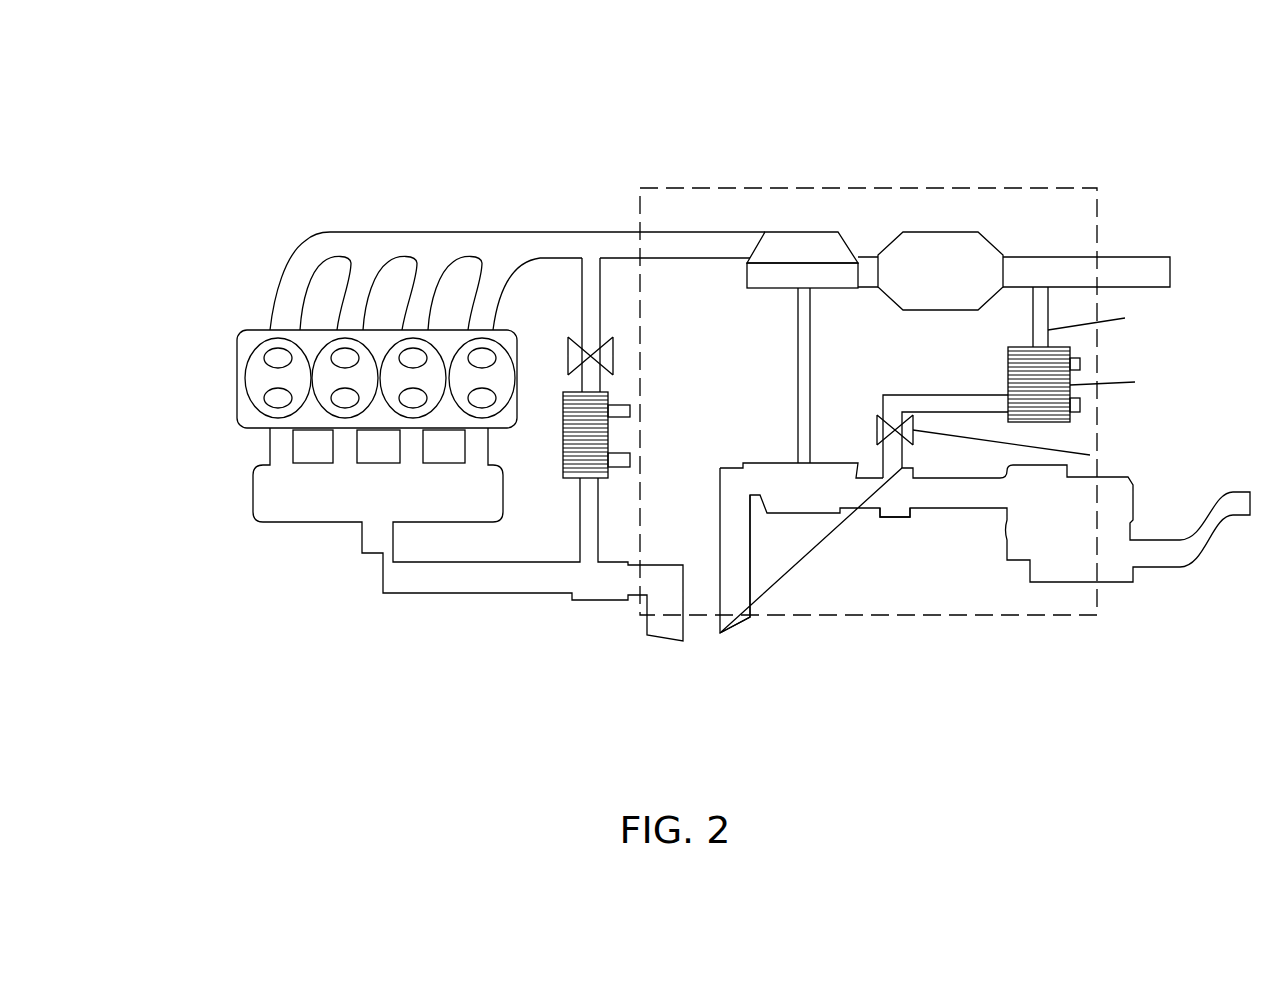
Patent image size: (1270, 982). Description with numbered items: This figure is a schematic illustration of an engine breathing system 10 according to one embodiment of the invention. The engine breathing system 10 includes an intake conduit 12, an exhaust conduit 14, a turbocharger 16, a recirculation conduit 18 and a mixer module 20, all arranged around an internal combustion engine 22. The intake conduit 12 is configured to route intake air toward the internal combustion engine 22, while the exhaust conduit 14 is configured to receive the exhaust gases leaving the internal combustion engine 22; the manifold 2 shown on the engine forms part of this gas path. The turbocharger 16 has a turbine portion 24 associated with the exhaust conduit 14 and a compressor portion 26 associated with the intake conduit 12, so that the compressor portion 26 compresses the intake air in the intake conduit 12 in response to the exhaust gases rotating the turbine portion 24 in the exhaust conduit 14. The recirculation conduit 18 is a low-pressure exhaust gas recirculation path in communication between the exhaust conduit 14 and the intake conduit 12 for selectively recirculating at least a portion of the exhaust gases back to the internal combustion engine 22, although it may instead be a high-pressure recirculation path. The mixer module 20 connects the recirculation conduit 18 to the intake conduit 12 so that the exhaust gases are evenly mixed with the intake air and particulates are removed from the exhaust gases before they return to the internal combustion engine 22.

The exhaust manifold 2 is at (320, 245).
The engine breathing system 10 is at (1128, 174).
The intake conduit 12 is at (957, 508).
The exhaust conduit 14 is at (298, 522).
The turbocharger 16 is at (784, 414).
The recirculation conduit 18 is at (952, 395).
The mixer module 20 is at (890, 517).
The internal combustion engine 22 is at (237, 348).
The turbine portion 24 is at (802, 250).
The compressor portion 26 is at (807, 513).